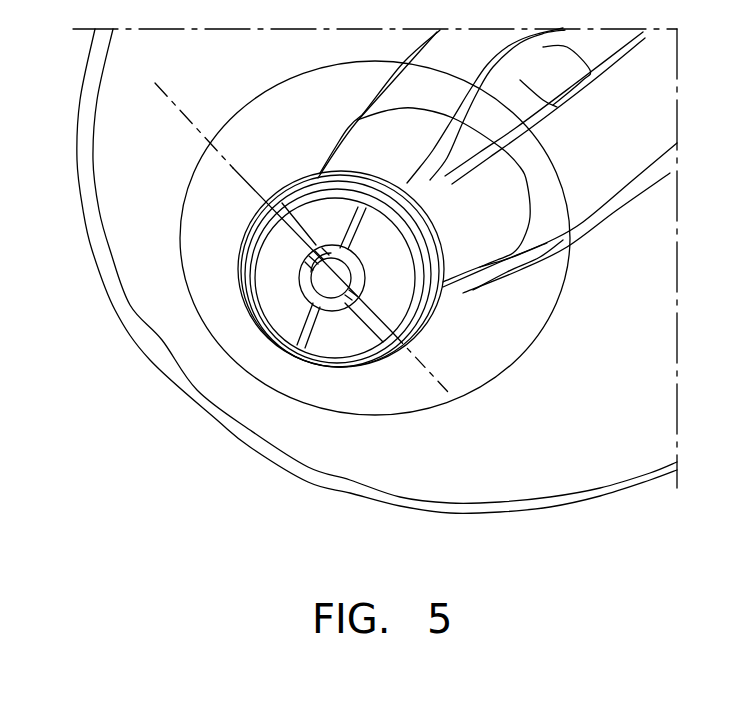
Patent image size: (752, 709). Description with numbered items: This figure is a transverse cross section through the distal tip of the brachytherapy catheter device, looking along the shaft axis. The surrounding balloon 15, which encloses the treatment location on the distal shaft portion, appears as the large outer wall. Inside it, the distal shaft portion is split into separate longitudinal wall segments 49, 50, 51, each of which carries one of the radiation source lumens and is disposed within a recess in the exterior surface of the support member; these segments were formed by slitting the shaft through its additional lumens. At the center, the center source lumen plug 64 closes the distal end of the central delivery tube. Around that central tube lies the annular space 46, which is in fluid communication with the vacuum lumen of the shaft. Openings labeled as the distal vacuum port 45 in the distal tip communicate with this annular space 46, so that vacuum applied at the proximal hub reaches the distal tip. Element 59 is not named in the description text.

The balloon 15 is at (143, 356).
The distal vacuum port 45 is at (286, 286).
The annular space 46 is at (378, 356).
The longitudinal wall segment 49 is at (420, 88).
The longitudinal wall segment 50 is at (582, 192).
The longitudinal wall segment 51 is at (540, 250).
The grooved hub rings 59 is at (312, 185).
The center source lumen plug 64 is at (330, 288).